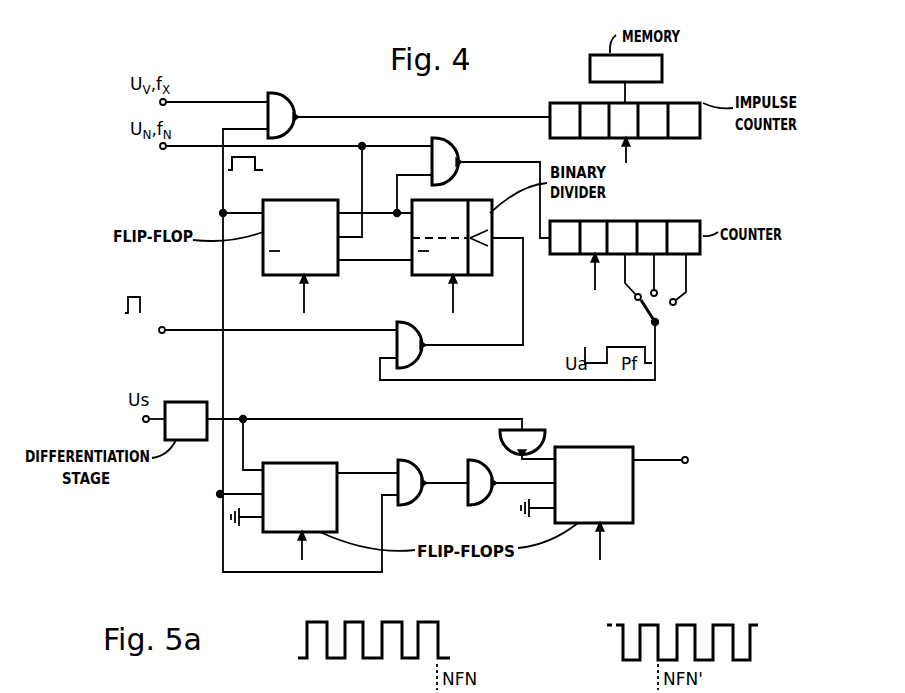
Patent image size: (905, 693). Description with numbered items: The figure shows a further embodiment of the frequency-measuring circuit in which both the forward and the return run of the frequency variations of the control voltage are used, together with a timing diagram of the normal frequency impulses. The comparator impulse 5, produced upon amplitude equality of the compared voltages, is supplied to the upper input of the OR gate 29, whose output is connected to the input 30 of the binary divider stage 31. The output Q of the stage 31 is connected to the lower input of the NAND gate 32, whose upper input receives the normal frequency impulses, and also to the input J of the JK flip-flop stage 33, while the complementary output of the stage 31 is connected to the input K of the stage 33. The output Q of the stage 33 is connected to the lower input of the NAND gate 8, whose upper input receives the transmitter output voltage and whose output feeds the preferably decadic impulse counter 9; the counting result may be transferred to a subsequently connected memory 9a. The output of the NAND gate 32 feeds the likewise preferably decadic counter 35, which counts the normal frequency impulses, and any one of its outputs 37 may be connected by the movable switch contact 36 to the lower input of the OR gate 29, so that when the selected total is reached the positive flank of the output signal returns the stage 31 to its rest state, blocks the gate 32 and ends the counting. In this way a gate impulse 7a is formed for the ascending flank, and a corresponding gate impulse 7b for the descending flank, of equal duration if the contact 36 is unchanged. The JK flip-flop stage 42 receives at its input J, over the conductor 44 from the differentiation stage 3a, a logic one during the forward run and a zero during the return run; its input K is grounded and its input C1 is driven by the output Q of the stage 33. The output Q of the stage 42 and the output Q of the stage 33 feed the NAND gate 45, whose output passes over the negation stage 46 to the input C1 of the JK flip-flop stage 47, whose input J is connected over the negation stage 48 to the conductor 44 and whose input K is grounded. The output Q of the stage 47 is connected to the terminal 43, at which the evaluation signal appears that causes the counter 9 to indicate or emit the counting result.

The differentiation stage 3a is at (186, 409).
The comparator impulse 5 is at (261, 314).
The gate impulse 7a is at (261, 165).
The pulse signal 7b is at (275, 165).
The NAND gate 8 is at (281, 103).
The impulse counter 9 is at (633, 137).
The memory 9a is at (641, 79).
The OR gate 29 is at (408, 332).
The input of binary divider stage 30 is at (472, 280).
The binary divider stage 31 is at (453, 247).
The NAND gate 32 is at (473, 184).
The JK flip-flop stage 33 is at (306, 247).
The counter 35 is at (625, 250).
The movable switch contact 36 is at (664, 321).
The counter outputs 37 is at (625, 289).
The JK flip-flop stage 42 is at (300, 503).
The terminal 43 is at (667, 463).
The conductor 44 is at (364, 412).
The NAND gate 45 is at (407, 470).
The negation stage 46 is at (477, 470).
The JK flip-flop stage 47 is at (594, 498).
The negation stage 48 is at (527, 431).